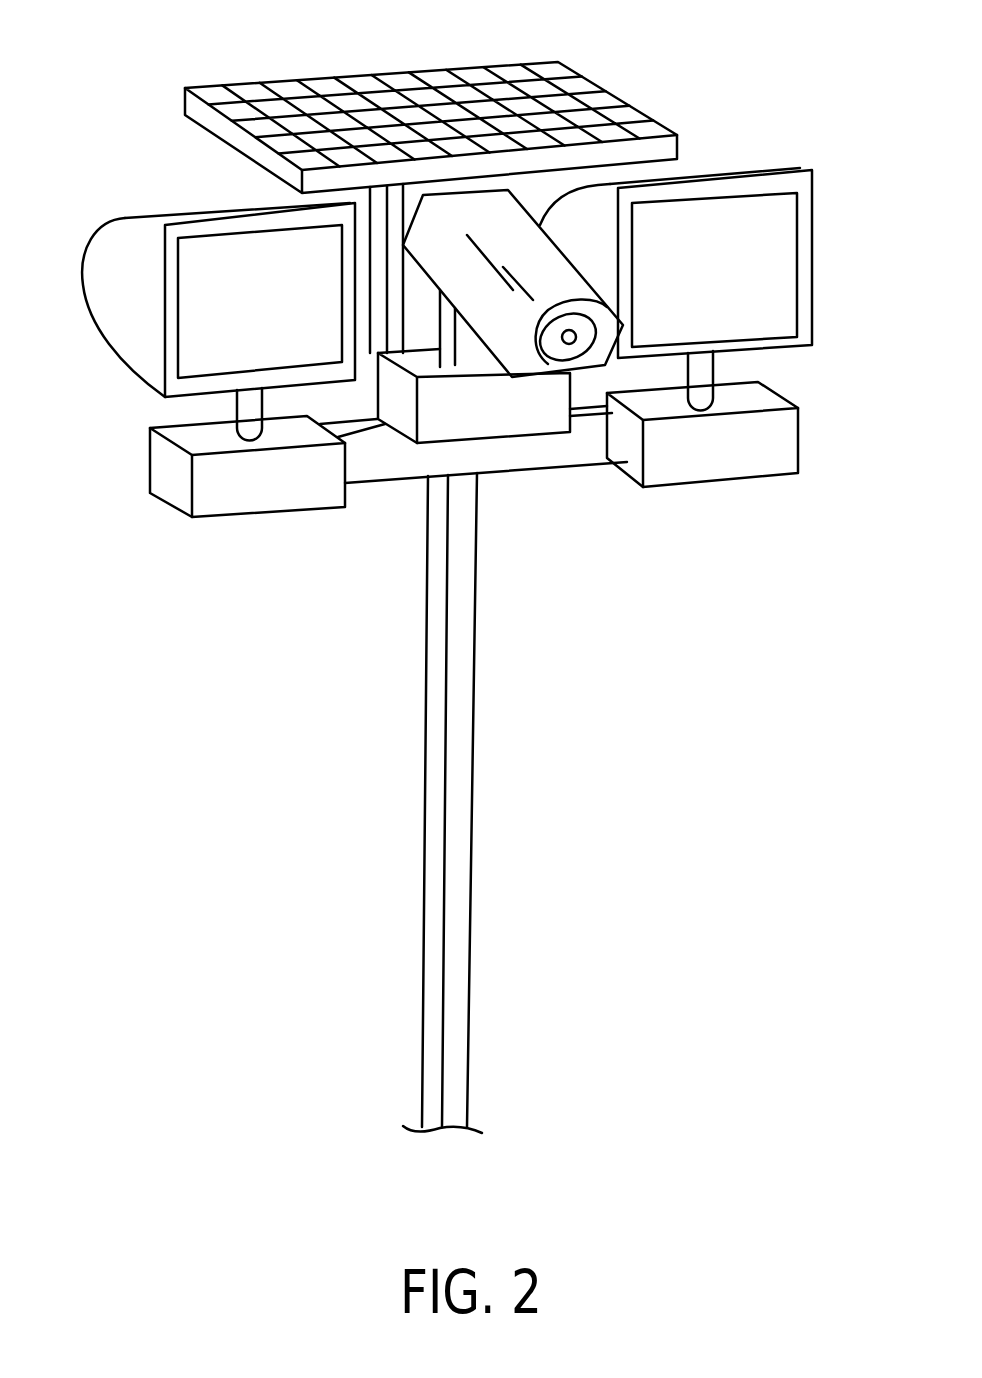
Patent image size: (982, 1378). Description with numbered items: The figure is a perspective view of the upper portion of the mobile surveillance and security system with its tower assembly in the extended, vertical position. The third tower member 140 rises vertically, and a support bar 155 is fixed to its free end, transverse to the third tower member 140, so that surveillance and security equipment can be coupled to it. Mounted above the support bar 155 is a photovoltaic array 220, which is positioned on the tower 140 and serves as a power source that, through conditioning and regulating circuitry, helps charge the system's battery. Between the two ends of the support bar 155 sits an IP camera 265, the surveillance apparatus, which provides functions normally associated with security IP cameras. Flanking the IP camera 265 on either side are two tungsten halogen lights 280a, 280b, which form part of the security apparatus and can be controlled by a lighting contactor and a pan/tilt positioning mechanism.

The photovoltaic array 220 is at (362, 78).
The tungsten halogen light 280a is at (215, 225).
The tungsten halogen light 280b is at (713, 188).
The IP camera 265 is at (558, 352).
The support bar 155 is at (503, 455).
The third tower member 140 is at (468, 988).